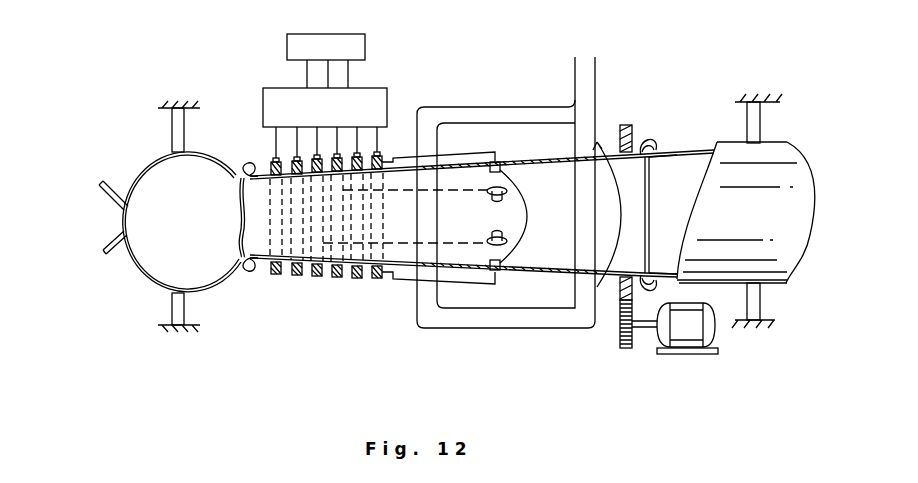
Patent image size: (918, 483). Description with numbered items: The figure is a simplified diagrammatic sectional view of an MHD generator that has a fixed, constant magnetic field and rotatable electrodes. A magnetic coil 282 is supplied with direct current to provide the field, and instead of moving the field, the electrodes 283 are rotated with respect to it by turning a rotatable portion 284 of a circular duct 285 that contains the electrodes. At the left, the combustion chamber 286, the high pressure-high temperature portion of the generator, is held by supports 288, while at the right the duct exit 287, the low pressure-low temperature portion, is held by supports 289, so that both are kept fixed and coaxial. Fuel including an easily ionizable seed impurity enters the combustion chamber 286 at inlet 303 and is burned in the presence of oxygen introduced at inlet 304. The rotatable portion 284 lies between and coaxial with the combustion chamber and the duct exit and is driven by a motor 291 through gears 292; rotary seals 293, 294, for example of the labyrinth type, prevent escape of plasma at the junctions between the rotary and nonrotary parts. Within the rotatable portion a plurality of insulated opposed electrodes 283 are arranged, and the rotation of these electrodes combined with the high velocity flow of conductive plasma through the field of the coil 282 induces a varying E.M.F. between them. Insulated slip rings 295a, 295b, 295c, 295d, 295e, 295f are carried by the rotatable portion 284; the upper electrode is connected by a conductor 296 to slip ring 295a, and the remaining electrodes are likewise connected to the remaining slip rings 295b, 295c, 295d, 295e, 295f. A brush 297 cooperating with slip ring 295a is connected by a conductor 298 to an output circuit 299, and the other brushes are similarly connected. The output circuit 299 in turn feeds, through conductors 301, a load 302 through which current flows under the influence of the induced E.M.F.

The magnetic coil 282 is at (453, 107).
The electrodes 283 is at (519, 210).
The rotatable portion of the duct 284 is at (536, 165).
The circular duct 285 is at (687, 202).
The combustion chamber 286 is at (148, 284).
The duct exit 287 is at (674, 152).
The supports 288 is at (186, 128).
The supports 289 is at (760, 120).
The motor 291 is at (663, 346).
The gears 292 is at (620, 343).
The rotary seal 293 is at (250, 167).
The rotary seal 294 is at (647, 139).
The slip ring 295a is at (378, 279).
The slip ring 295b is at (356, 279).
The slip ring 295c is at (335, 265).
The slip ring 295d is at (320, 273).
The slip ring 295e is at (298, 277).
The slip ring 295f is at (272, 273).
The conductor 296 is at (480, 149).
The brush 297 is at (380, 159).
The conductor 298 is at (378, 128).
The output circuit 299 is at (263, 108).
The conductors 301 is at (353, 74).
The load 302 is at (330, 34).
The fuel and seed inlet 303 is at (80, 187).
The oxygen inlet 304 is at (114, 236).